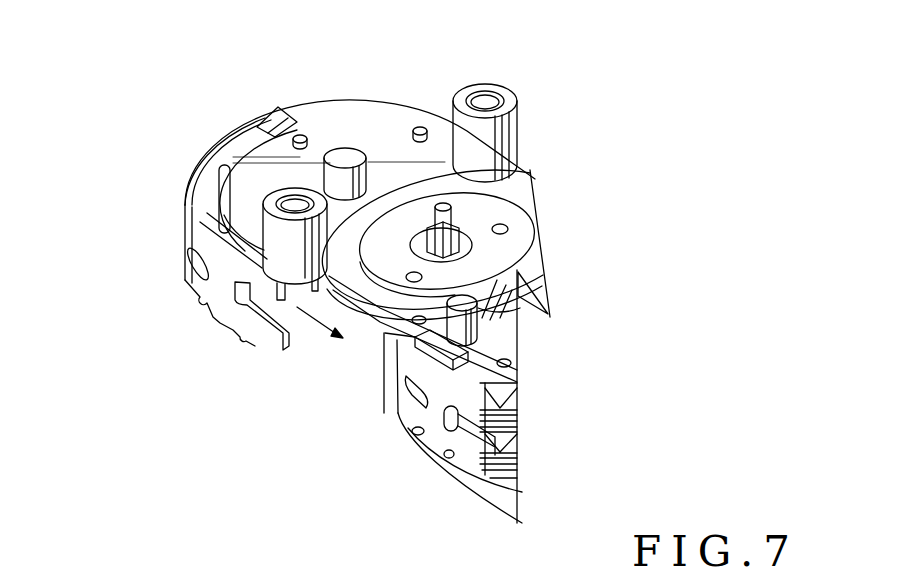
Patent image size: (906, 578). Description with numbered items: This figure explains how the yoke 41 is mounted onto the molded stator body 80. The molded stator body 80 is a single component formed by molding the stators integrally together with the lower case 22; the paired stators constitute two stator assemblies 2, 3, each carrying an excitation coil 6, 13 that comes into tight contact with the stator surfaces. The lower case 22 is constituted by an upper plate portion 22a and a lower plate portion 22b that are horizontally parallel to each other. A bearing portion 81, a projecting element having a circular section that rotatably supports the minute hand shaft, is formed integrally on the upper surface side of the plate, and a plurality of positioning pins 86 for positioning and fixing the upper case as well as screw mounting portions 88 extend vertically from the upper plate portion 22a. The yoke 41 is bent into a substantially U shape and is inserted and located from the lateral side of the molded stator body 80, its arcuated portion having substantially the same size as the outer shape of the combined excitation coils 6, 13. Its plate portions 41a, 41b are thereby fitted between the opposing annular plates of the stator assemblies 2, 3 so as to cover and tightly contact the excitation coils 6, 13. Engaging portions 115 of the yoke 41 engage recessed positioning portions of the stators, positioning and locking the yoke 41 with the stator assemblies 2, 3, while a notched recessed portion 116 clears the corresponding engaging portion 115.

The stator assembly 2 is at (530, 403).
The stator assembly 3 is at (528, 452).
The excitation coil 6 is at (518, 405).
The excitation coil 13 is at (511, 452).
The lower case 22 is at (358, 97).
The upper plate portion 22a is at (411, 116).
The lower plate portion 22b is at (507, 501).
The yoke 41 is at (169, 222).
The plate portion 41a is at (213, 143).
The plate portion 41b is at (187, 281).
The molded stator body 80 is at (377, 402).
The bearing portion 81 is at (452, 212).
The positioning pin 86 is at (484, 324).
The screw mounting portion 88 is at (517, 142).
The engaging portion 115 is at (222, 185).
The notched recessed portion 116 is at (402, 351).